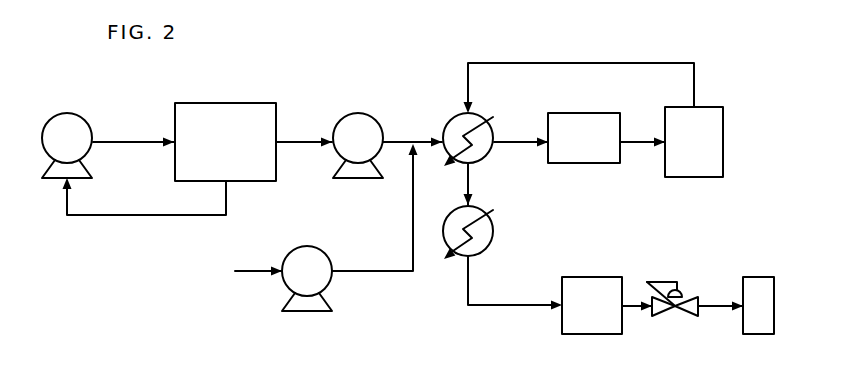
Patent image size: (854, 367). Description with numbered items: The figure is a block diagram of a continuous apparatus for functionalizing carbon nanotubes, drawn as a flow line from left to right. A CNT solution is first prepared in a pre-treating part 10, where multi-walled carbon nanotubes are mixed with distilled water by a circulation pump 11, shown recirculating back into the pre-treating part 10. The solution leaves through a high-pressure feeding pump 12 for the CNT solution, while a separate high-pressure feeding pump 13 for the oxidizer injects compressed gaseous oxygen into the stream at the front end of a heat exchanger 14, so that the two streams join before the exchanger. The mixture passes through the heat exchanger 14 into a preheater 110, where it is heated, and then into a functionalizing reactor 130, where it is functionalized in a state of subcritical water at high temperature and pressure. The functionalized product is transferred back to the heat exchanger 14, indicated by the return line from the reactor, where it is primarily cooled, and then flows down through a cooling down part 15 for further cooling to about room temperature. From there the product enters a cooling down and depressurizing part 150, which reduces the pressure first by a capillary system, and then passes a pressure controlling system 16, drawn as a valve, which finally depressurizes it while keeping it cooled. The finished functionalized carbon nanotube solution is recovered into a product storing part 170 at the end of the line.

The pre-treating part 10 is at (223, 103).
The circulation pump 11 is at (78, 116).
The high-pressure feeding pump for CNT solution 12 is at (368, 115).
The high-pressure feeding pump for oxidizer 13 is at (310, 247).
The heat exchanger 14 is at (478, 114).
The cooling down part 15 is at (477, 206).
The pressure controlling system 16 is at (690, 288).
The preheater 110 is at (582, 113).
The functionalizing reactor 130 is at (707, 107).
The cooling down and depressurizing part 150 is at (588, 277).
The product storing part 170 is at (767, 277).